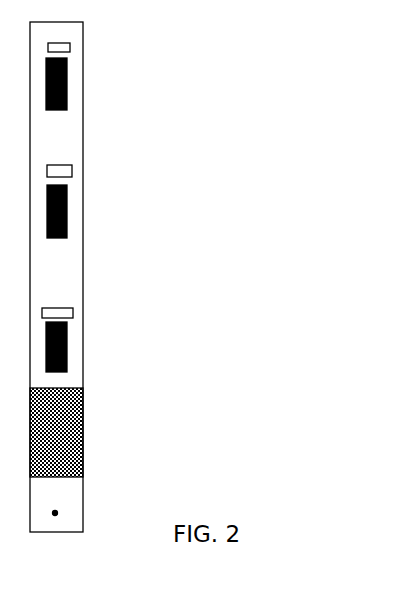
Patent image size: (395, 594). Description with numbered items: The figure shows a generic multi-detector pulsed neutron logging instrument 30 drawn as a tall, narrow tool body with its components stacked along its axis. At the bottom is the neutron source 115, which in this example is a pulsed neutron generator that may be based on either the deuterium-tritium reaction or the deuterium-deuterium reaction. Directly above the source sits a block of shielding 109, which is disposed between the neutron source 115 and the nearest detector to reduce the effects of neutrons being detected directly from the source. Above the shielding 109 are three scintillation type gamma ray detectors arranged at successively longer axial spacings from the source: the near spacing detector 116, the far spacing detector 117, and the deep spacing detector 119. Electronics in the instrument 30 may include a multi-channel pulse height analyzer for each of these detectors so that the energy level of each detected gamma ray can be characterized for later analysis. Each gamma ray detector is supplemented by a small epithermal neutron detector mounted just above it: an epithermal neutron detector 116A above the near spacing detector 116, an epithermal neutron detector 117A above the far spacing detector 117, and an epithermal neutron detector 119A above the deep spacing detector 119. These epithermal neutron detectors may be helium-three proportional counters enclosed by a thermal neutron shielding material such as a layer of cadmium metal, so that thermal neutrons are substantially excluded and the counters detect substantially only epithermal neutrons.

The multi-detector pulsed neutron logging instrument 30 is at (126, 152).
The epithermal neutron detector 119A is at (70, 47).
The deep spacing gamma ray detector 119 is at (67, 80).
The epithermal neutron detector 117A is at (72, 170).
The far spacing gamma ray detector 117 is at (67, 208).
The epithermal neutron detector 116A is at (73, 313).
The near spacing gamma ray detector 116 is at (67, 345).
The shielding 109 is at (83, 423).
The neutron source 115 is at (58, 513).